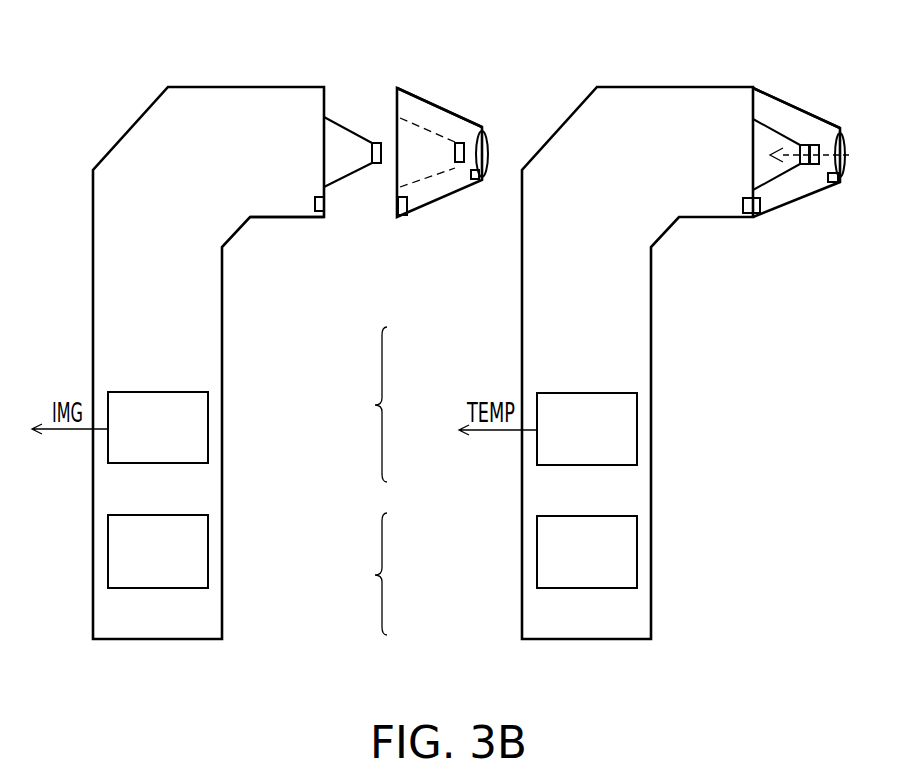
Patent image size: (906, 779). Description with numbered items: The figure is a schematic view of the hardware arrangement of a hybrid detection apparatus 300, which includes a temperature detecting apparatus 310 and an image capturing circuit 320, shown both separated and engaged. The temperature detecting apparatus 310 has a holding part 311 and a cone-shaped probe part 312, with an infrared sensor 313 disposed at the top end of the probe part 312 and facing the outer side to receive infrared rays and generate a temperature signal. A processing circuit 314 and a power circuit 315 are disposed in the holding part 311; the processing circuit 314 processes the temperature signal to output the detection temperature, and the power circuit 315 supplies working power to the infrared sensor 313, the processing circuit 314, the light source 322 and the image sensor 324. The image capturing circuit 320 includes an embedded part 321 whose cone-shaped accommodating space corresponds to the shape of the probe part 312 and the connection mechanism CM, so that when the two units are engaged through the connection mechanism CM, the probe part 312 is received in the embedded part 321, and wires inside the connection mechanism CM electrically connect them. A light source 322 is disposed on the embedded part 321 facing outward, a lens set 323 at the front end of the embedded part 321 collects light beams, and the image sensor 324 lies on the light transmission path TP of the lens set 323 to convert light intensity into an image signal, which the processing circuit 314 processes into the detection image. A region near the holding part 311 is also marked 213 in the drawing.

The hybrid detection apparatus 300 is at (813, 708).
The temperature detecting apparatus 310 is at (381, 406).
The holding part 311 is at (220, 120).
The probe part 312 is at (352, 135).
The infrared sensor 313 is at (378, 140).
The processing circuit 314 is at (208, 429).
The power circuit 315 is at (208, 553).
The image capturing circuit 320 is at (451, 77).
The embedded part 321 is at (422, 105).
The light source 322 is at (475, 180).
The lens set 323 is at (484, 143).
The image sensor 324 is at (460, 163).
The housing portion 213 is at (288, 198).
The connection mechanism CM is at (319, 218).
The light transmission path TP is at (792, 148).